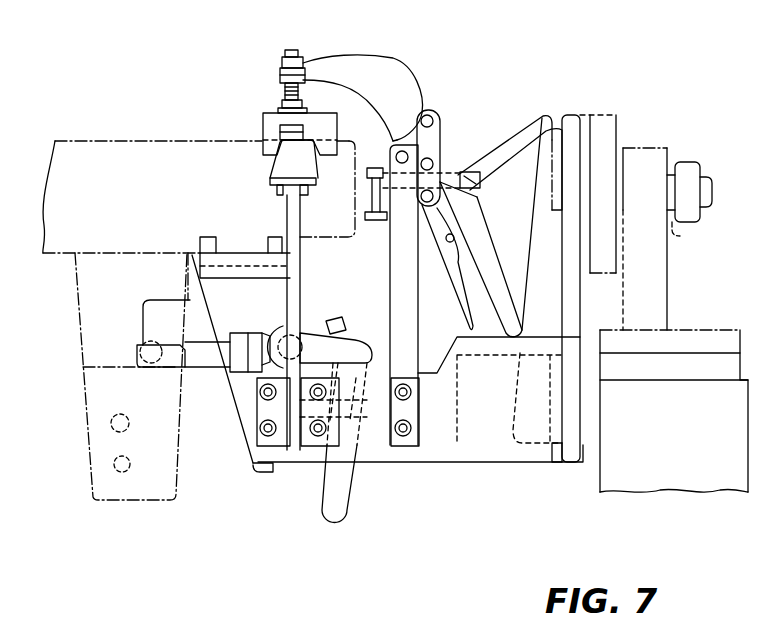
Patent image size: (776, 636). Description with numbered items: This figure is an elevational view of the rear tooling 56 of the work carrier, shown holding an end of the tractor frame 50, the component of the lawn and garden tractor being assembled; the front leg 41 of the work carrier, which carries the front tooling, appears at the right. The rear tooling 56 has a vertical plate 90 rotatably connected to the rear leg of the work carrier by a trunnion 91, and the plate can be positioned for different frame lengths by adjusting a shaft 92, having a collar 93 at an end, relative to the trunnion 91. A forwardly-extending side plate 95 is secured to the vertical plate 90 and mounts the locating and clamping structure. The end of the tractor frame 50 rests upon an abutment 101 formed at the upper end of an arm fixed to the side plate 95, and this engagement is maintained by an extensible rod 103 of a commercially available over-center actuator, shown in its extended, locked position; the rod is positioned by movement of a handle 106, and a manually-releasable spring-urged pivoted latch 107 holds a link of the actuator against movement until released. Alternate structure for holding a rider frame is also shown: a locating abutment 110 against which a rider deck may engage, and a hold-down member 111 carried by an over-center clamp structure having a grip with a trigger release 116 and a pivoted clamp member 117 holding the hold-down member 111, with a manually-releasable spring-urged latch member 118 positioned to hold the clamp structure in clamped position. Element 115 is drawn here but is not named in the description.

The front leg 41 is at (693, 492).
The tractor frame 50 is at (150, 141).
The rear tooling 56 is at (508, 58).
The vertical plate 90 is at (571, 465).
The trunnion 91 is at (668, 136).
The shaft 92 is at (669, 166).
The collar 93 is at (680, 236).
The side plate 95 is at (447, 466).
The abutment 101 is at (241, 233).
The extensible rod 103 is at (208, 370).
The handle 106 is at (322, 497).
The latch 107 is at (350, 320).
The locating abutment 110 is at (270, 170).
The hold-down member 111 is at (270, 112).
The clamp arm 115 is at (495, 246).
The trigger release 116 is at (455, 292).
The pivoted clamp member 117 is at (395, 58).
The latch member 118 is at (455, 170).